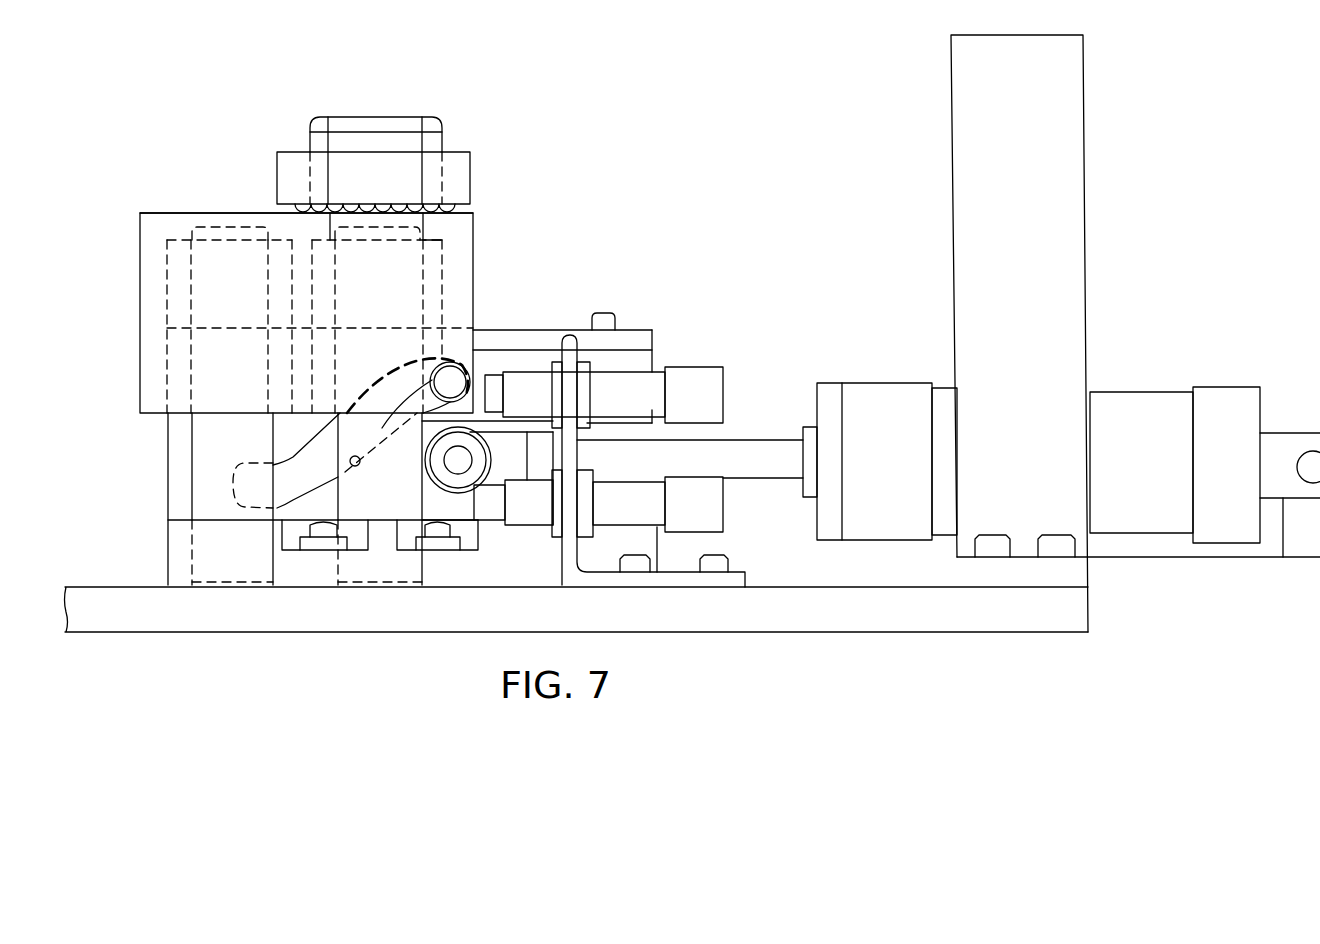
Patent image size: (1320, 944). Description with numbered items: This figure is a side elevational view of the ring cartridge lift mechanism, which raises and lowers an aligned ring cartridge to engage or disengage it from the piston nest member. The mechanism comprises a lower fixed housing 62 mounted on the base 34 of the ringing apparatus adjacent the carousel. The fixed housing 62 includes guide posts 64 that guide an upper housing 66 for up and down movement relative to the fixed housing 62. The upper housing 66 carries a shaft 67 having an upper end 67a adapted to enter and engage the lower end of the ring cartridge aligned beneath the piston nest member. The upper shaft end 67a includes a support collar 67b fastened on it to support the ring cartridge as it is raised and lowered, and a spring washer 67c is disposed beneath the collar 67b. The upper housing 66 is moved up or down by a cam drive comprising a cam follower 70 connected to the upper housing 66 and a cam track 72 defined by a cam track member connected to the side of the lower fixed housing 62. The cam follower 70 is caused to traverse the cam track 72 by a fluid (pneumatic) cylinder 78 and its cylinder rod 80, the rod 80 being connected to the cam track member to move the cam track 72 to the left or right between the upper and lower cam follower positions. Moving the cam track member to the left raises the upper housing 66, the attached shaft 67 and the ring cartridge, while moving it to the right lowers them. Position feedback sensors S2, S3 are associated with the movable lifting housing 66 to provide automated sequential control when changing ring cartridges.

The base 34 is at (942, 632).
The lower fixed housing 62 is at (175, 572).
The guide posts 64 is at (190, 253).
The upper housing 66 is at (155, 347).
The shaft 67 is at (427, 218).
The upper end 67a is at (408, 113).
The support collar 67b is at (473, 178).
The spring washer 67c is at (300, 207).
The cam follower 70 is at (407, 412).
The cam track 72 is at (358, 465).
The fluid (pneumatic) cylinder 78 is at (908, 352).
The cylinder rod 80 is at (738, 442).
The position feedback sensor S2 is at (665, 527).
The position feedback sensor S3 is at (642, 372).